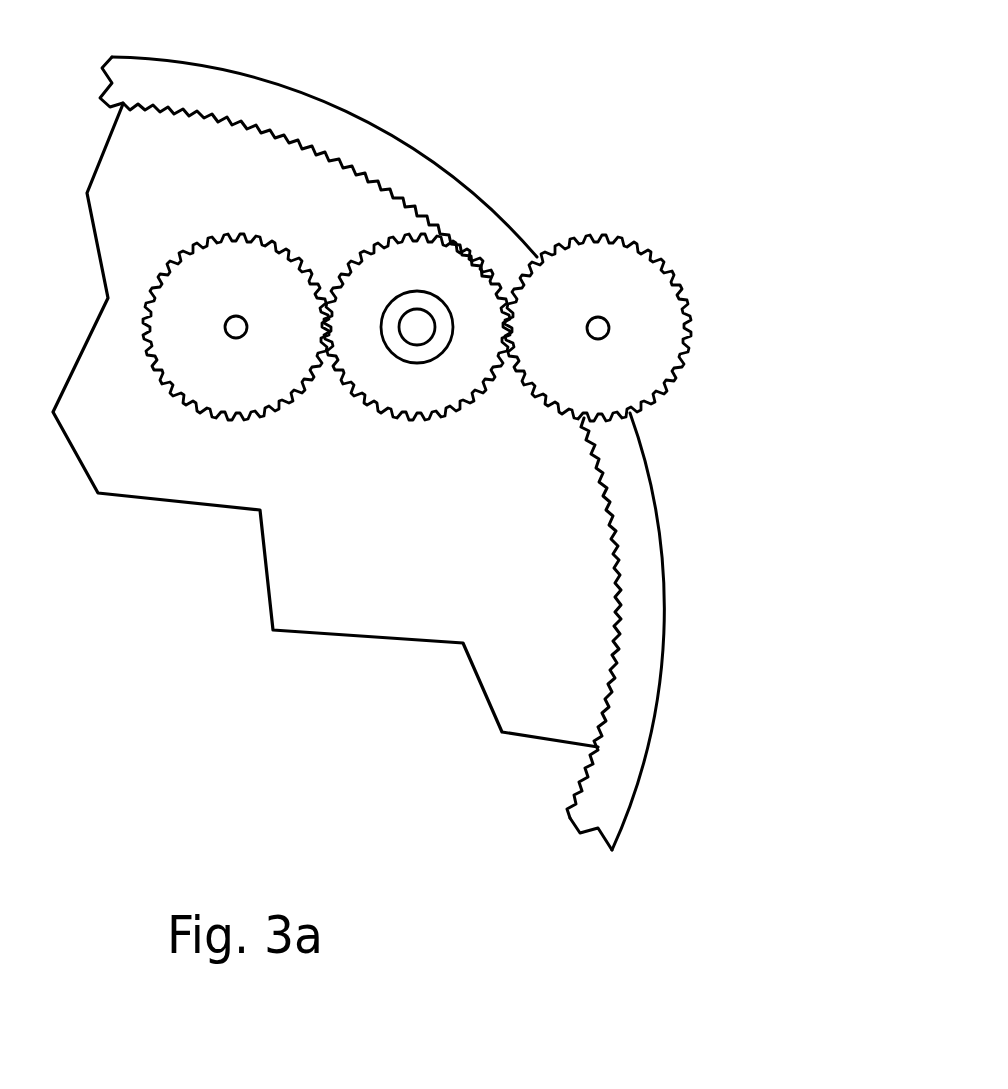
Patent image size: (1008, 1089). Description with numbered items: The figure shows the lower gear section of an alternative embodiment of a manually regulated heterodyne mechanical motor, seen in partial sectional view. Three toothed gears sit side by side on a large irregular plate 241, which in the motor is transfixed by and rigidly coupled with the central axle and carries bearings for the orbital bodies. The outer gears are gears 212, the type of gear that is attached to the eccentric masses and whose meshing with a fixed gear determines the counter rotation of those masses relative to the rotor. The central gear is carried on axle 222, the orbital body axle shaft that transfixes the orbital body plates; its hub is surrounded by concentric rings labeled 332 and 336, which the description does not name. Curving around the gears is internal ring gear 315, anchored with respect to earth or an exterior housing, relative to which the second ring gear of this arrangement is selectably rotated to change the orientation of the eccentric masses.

The gear 212 is at (218, 278).
The axle 222 is at (413, 325).
The gear body 332 is at (423, 277).
The hub bearing 336 is at (445, 327).
The internal ring gear 315 is at (637, 517).
The plate 241 is at (568, 612).